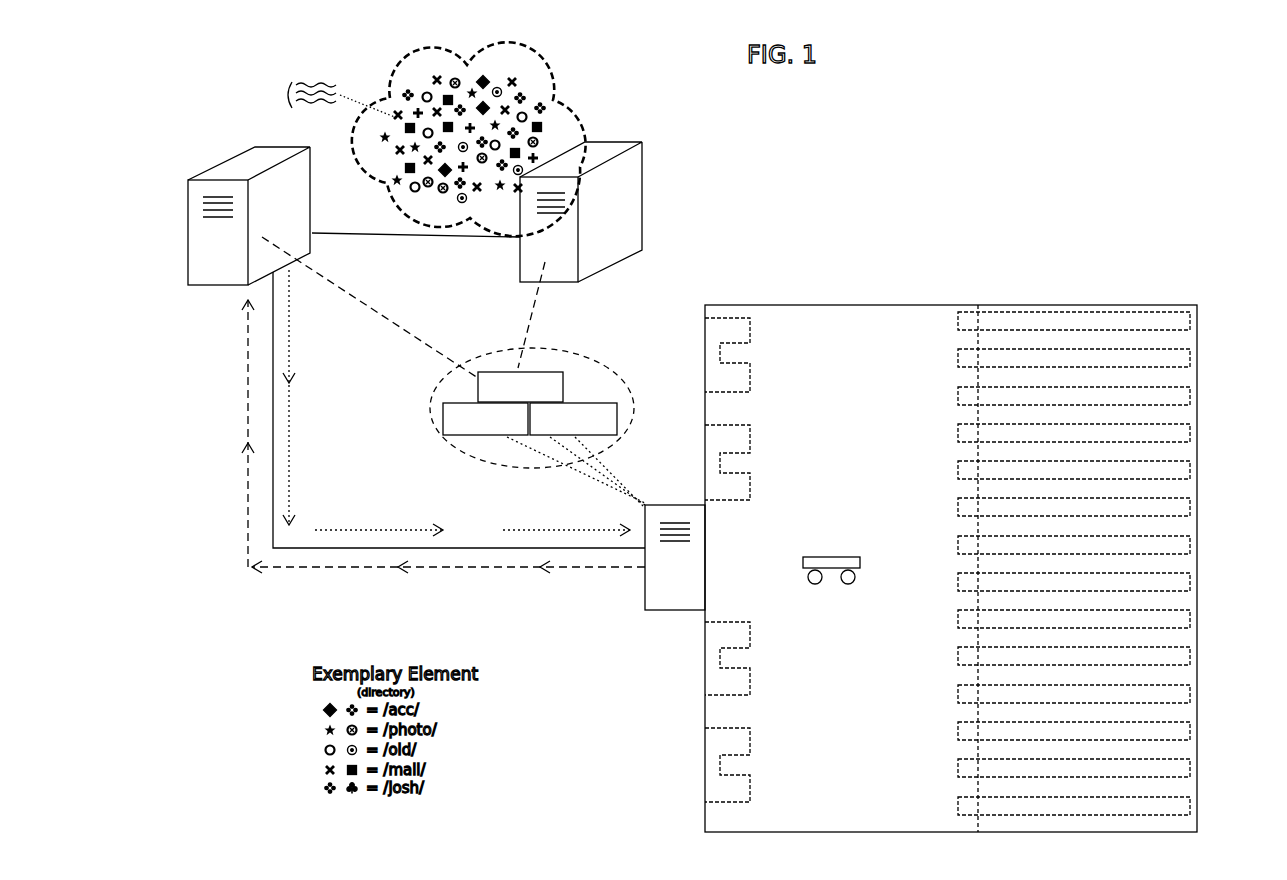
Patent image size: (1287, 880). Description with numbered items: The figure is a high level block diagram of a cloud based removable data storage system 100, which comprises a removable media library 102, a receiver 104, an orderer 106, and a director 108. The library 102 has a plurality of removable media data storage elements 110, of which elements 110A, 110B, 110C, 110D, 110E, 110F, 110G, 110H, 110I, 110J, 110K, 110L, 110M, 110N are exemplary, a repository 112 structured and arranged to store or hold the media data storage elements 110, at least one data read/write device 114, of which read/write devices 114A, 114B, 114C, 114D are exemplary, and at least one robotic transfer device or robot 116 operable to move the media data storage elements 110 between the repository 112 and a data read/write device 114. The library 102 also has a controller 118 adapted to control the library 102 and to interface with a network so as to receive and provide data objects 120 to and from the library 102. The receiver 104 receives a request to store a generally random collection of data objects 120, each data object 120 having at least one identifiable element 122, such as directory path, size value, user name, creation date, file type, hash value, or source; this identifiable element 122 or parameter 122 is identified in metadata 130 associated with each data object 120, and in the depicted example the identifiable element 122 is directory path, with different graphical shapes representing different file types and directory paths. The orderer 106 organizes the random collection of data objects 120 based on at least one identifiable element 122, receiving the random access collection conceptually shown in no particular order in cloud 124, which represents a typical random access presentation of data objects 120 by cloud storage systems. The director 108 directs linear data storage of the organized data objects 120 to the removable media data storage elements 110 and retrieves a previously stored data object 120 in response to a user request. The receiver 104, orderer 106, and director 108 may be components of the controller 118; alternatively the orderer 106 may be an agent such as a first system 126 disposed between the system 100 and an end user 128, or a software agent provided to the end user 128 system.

The cloud based removable data storage system 100 is at (886, 187).
The removable media library 102 is at (1055, 300).
The receiver 104 is at (443, 432).
The orderer 106 is at (563, 376).
The director 108 is at (617, 416).
The removable media data storage elements 110 is at (1042, 549).
The removable media data storage element 110A is at (963, 322).
The removable media data storage element 110B is at (963, 359).
The removable media data storage element 110C is at (963, 397).
The removable media data storage element 110D is at (963, 434).
The removable media data storage element 110E is at (963, 471).
The removable media data storage element 110F is at (963, 508).
The removable media data storage element 110G is at (963, 546).
The removable media data storage element 110H is at (963, 583).
The removable media data storage element 110I is at (963, 620).
The removable media data storage element 110J is at (963, 657).
The removable media data storage element 110K is at (963, 695).
The removable media data storage element 110L is at (963, 732).
The removable media data storage element 110M is at (963, 769).
The removable media data storage element 110N is at (963, 807).
The repository 112 is at (1036, 606).
The data read/write device 114 is at (758, 541).
The data read/write device 114A is at (742, 383).
The data read/write device 114B is at (745, 490).
The data read/write device 114C is at (742, 685).
The data read/write device 114D is at (742, 790).
The robotic transfer device 116 is at (830, 556).
The controller 118 is at (645, 596).
The data objects 120 is at (395, 117).
The identifiable element 122 is at (383, 800).
The cloud 124 is at (573, 105).
The first system 126 is at (236, 268).
The end user 128 is at (626, 241).
The metadata 130 is at (324, 100).